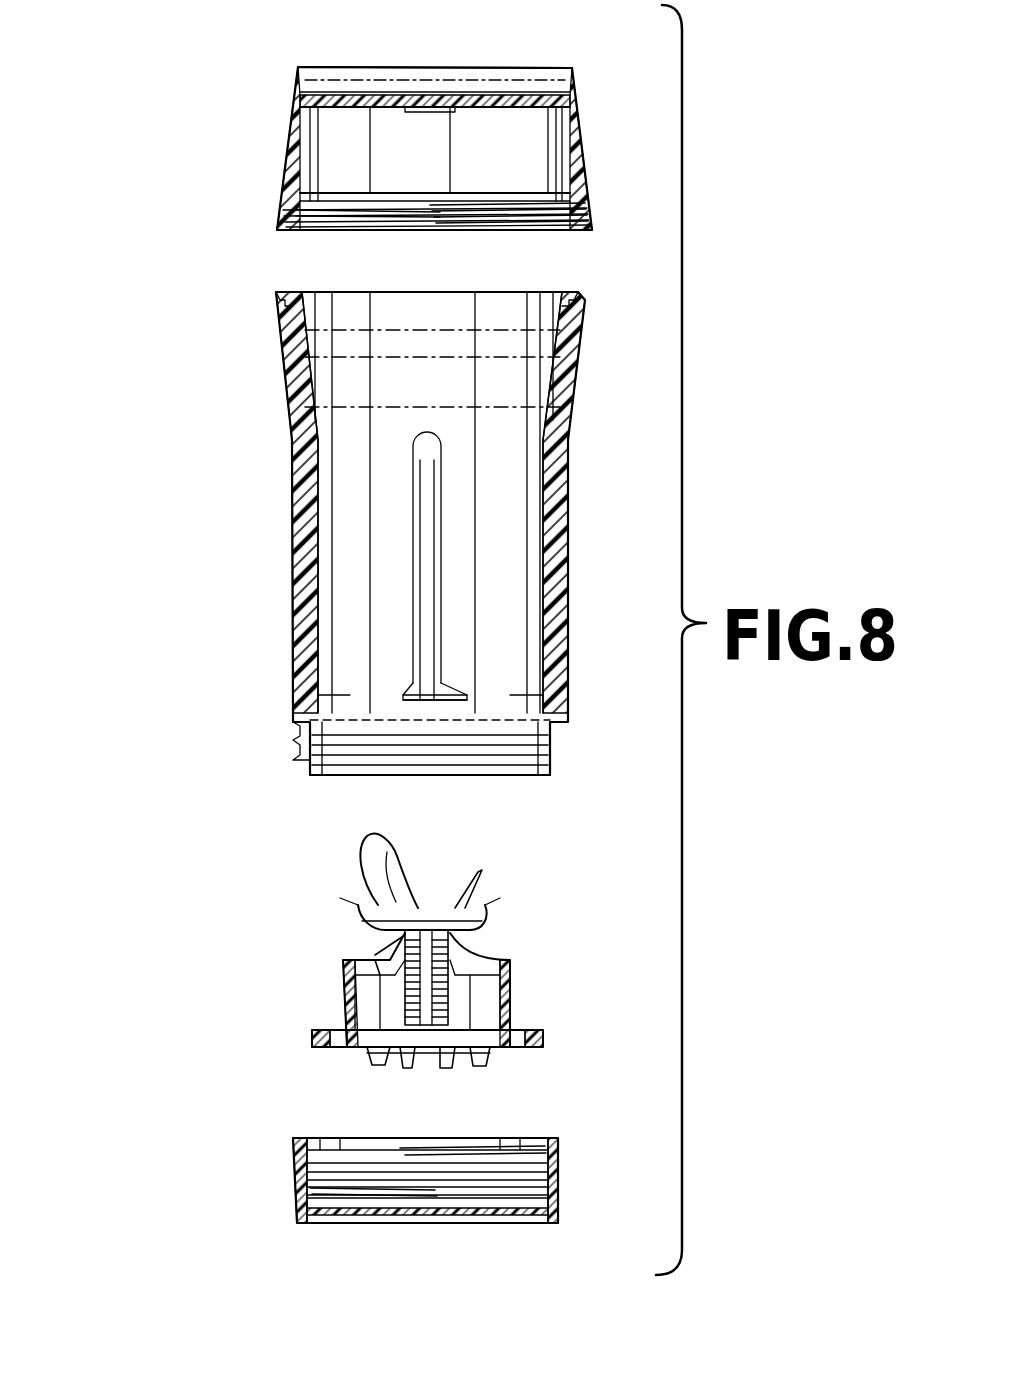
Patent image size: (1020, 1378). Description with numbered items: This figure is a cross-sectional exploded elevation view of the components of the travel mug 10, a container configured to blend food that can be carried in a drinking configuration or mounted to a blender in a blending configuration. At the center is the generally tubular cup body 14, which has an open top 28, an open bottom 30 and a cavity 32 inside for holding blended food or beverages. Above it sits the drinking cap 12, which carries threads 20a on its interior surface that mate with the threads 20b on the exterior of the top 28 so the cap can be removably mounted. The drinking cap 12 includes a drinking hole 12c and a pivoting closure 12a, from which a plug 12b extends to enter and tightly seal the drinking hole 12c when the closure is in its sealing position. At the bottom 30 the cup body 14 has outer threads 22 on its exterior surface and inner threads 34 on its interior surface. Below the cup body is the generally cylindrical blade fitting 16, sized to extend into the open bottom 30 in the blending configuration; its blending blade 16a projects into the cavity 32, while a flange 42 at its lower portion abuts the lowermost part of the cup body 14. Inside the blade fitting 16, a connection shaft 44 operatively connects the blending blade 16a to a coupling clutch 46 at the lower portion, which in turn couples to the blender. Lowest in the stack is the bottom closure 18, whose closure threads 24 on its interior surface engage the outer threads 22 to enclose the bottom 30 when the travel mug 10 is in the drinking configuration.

The travel mug 10 is at (210, 392).
The drinking cap 12 is at (575, 140).
The closure 12a is at (410, 66).
The plug 12b is at (390, 106).
The drinking hole 12c is at (455, 108).
The cup body 14 is at (297, 553).
The blade fitting 16 is at (512, 986).
The blending blade 16a is at (378, 866).
The bottom closure 18 is at (292, 1178).
The threads 20a is at (557, 232).
The threads 20b is at (284, 297).
The outer threads 22 is at (305, 750).
The closure threads 24 is at (465, 1150).
The open top 28 is at (441, 303).
The open bottom 30 is at (455, 772).
The cavity 32 is at (455, 513).
The inner threads 34 is at (418, 738).
The flange 42 is at (310, 1040).
The connection shaft 44 is at (373, 953).
The coupling clutch 46 is at (483, 1051).